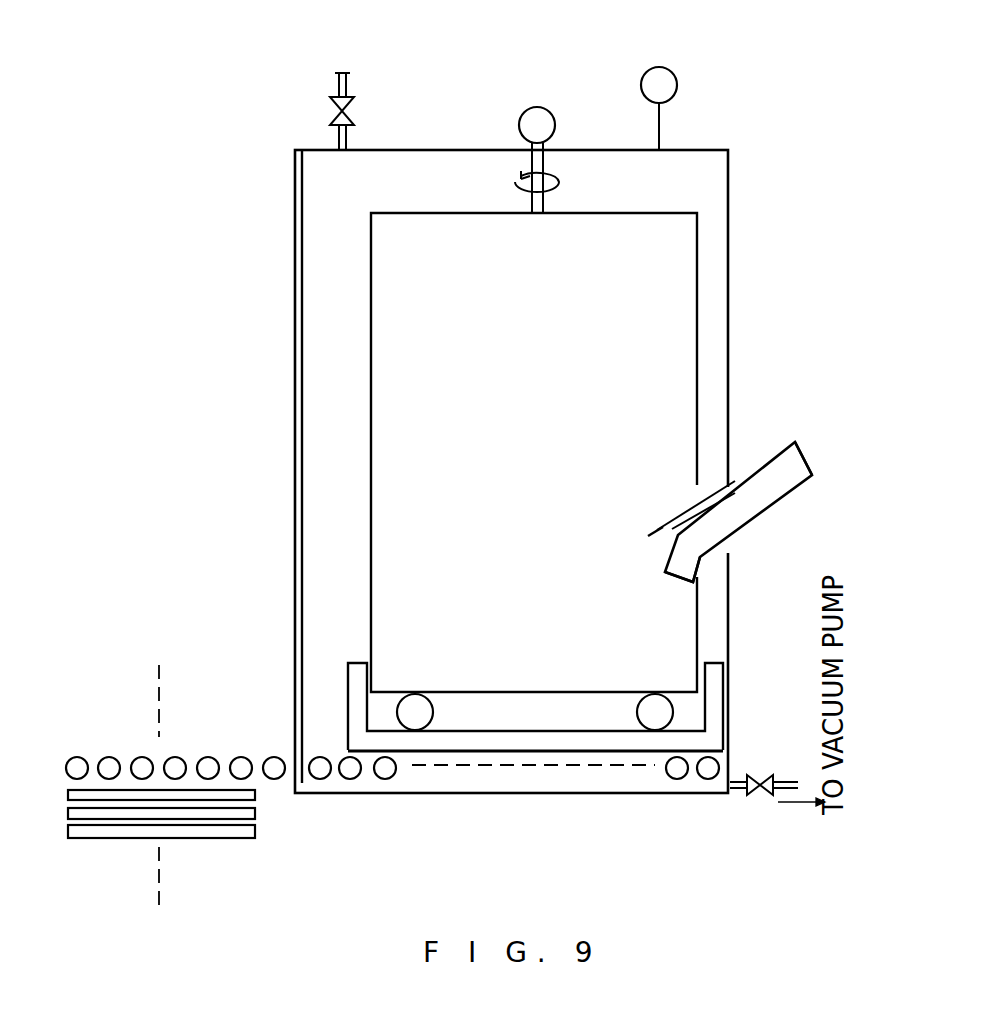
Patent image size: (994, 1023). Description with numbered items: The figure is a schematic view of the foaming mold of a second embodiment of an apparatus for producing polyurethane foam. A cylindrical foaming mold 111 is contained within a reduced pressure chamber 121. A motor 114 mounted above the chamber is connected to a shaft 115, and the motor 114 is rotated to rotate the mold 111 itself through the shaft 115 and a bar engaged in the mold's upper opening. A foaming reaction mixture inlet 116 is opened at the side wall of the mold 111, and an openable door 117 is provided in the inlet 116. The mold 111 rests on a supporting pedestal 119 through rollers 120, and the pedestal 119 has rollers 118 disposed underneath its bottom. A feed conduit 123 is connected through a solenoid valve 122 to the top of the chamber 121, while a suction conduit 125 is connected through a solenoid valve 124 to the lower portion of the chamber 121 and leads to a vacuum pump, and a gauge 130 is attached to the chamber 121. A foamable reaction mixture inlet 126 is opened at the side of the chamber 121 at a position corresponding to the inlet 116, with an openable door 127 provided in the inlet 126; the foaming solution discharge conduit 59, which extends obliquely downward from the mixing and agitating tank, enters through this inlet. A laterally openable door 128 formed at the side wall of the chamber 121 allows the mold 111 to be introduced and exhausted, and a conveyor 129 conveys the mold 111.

The foaming solution discharge conduit 59 is at (779, 471).
The cylindrical foaming mold 111 is at (371, 565).
The motor 114 is at (546, 117).
The shaft 115 is at (532, 164).
The foaming reaction mixture inlet 116 is at (712, 568).
The openable door 117 is at (660, 530).
The rollers 118 is at (242, 759).
The supporting pedestal 119 is at (507, 756).
The rollers 120 is at (428, 712).
The reduced pressure chamber 121 is at (729, 238).
The solenoid valve 122 is at (353, 103).
The feed conduit 123 is at (348, 75).
The solenoid valve 124 is at (766, 792).
The suction conduit 125 is at (737, 790).
The foamable reaction mixture inlet 126 is at (736, 544).
The openable door 127 is at (712, 486).
The laterally openable door 128 is at (295, 210).
The conveyor 129 is at (83, 843).
The gauge 130 is at (660, 70).